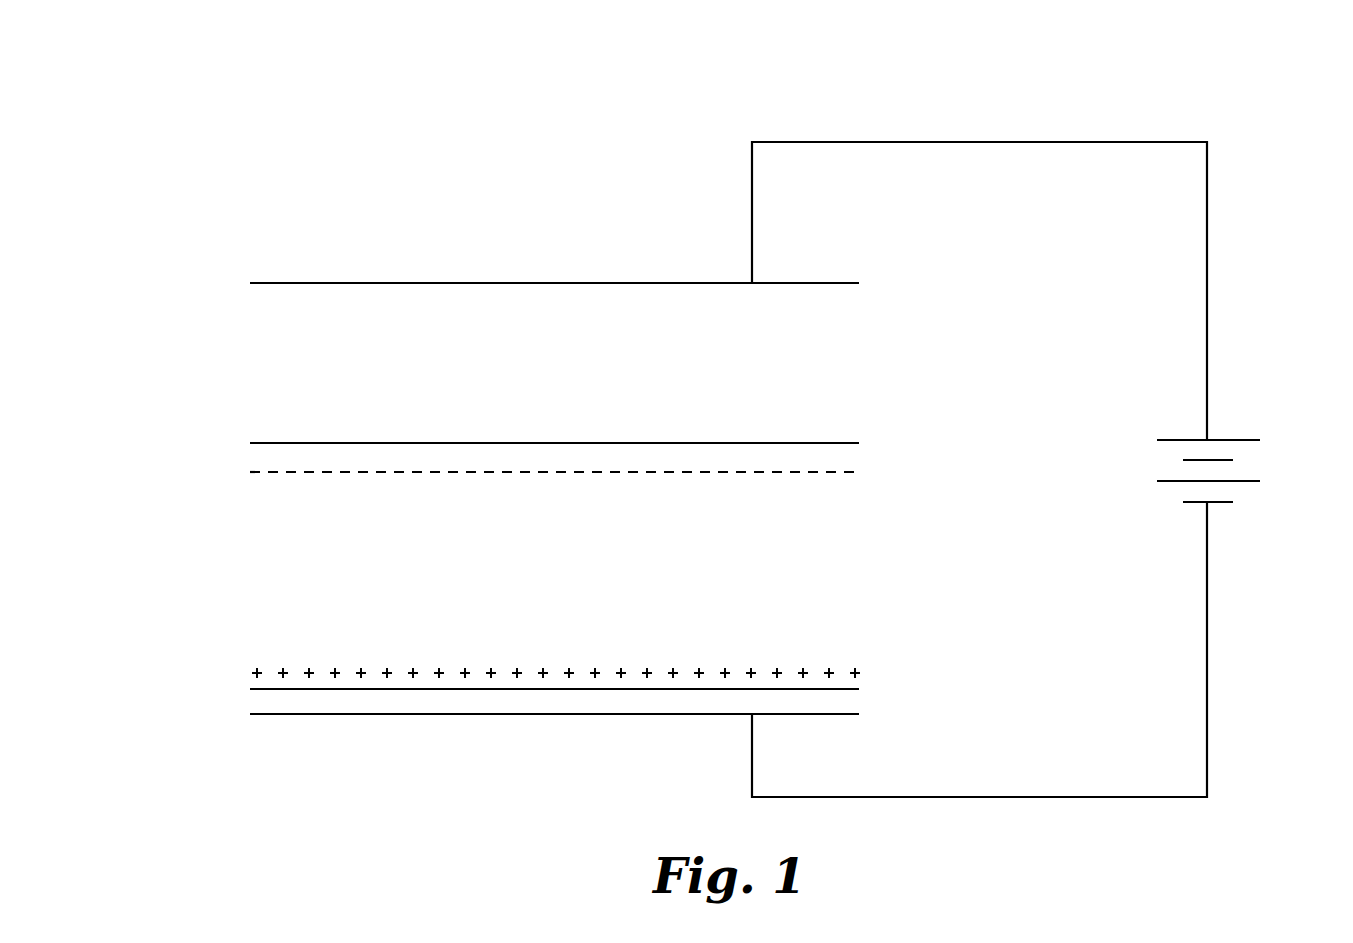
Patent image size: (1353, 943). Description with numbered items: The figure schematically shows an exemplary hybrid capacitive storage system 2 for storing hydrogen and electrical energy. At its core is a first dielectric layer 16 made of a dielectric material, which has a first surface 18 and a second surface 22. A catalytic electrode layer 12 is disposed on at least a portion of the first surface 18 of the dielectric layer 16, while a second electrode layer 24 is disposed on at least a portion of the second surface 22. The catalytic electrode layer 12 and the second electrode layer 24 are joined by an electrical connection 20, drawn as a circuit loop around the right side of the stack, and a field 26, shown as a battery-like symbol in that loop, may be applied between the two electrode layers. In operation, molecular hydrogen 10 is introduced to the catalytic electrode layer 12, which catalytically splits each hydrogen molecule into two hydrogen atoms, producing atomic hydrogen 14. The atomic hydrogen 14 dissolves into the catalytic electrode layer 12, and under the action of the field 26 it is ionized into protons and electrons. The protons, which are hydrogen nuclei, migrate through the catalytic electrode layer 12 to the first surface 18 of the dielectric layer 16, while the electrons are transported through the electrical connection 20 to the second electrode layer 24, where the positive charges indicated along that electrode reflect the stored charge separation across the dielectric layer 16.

The hybrid capacitive storage system 2 is at (1273, 132).
The molecular hydrogen 10 is at (333, 155).
The catalytic electrode layer 12 is at (310, 280).
The atomic hydrogen 14 is at (250, 318).
The first dielectric layer 16 is at (320, 570).
The first surface 18 is at (347, 443).
The electrical connection 20 is at (1115, 142).
The second surface 22 is at (262, 689).
The second electrode layer 24 is at (307, 714).
The field 26 is at (1257, 457).